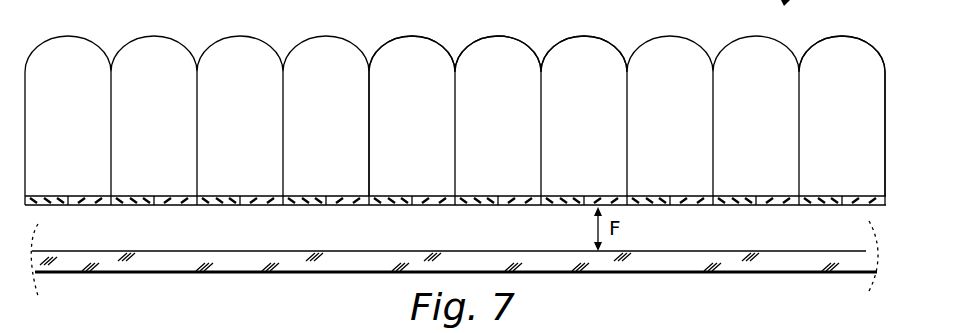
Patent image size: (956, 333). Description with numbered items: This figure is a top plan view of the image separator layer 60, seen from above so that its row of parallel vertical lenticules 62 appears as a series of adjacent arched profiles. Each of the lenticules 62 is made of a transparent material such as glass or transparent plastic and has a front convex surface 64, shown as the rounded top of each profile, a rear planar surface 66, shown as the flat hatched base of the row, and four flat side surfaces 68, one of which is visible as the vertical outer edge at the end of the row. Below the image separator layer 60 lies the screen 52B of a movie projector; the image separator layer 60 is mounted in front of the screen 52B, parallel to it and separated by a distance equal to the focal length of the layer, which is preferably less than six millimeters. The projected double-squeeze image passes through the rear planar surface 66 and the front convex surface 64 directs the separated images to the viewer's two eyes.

The image separator layer 60 is at (461, 166).
The parallel vertical lenticules 62 is at (68, 88).
The front convex surface 64 is at (557, 43).
The rear planar surface 66 is at (704, 206).
The flat side surfaces 68 is at (886, 77).
The screen 52B is at (407, 251).